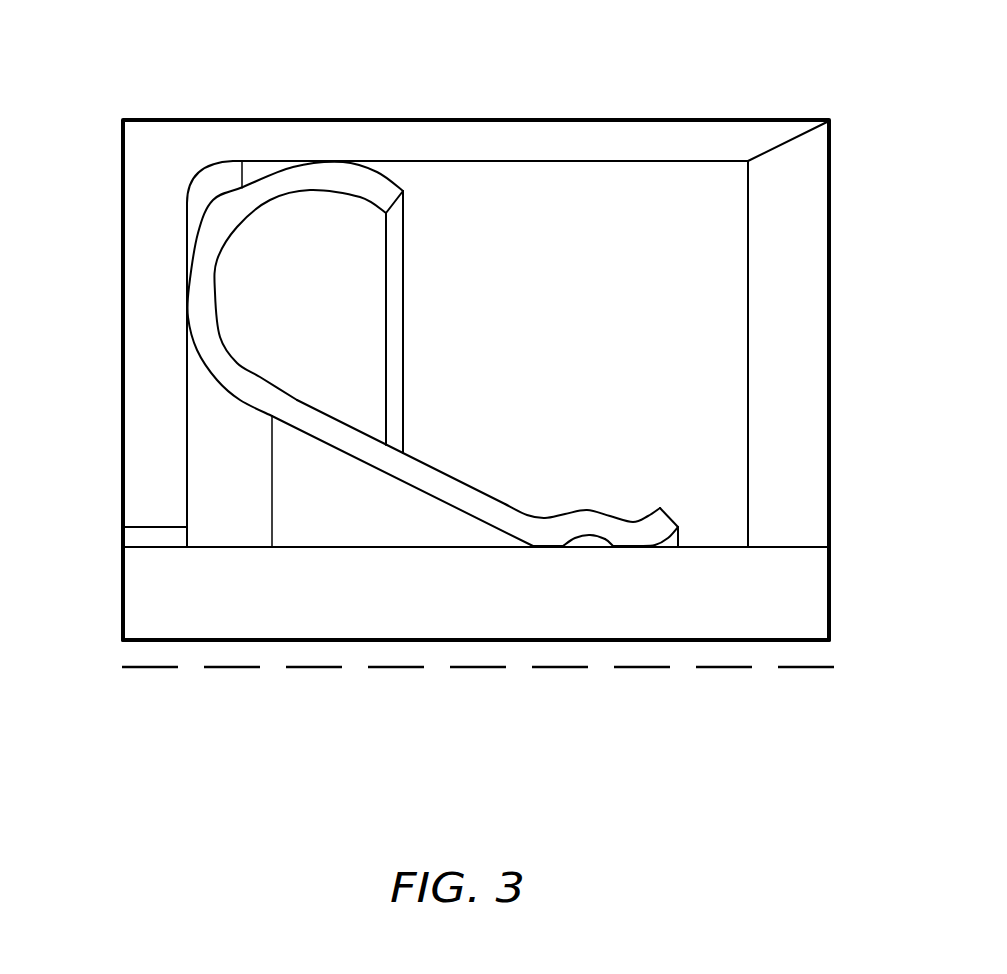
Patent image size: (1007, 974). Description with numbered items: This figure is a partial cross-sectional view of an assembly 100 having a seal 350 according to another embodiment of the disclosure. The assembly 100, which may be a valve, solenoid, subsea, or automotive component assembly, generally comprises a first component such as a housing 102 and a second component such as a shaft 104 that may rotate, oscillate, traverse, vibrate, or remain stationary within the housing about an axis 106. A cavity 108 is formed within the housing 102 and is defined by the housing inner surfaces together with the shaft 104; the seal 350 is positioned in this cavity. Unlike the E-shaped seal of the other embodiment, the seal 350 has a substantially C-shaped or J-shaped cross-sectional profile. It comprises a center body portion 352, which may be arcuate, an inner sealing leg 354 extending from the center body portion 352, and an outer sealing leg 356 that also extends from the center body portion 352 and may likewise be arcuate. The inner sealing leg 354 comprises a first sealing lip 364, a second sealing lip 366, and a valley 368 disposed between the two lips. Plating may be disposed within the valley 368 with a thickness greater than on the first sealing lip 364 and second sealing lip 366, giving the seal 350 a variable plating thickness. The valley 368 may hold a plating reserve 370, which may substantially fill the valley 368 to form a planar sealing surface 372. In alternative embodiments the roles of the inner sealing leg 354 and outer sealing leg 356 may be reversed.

The assembly 100 is at (763, 45).
The first component (housing) 102 is at (528, 118).
The second component (shaft) 104 is at (545, 641).
The axis 106 is at (730, 669).
The cavity 108 is at (570, 264).
The seal 350 is at (433, 458).
The center body portion 352 is at (142, 272).
The inner sealing leg 354 is at (307, 432).
The outer sealing leg 356 is at (380, 175).
The first sealing lip 364 is at (635, 548).
The second sealing lip 366 is at (533, 548).
The valley 368 is at (596, 540).
The plating reserve 370 is at (577, 540).
The planar sealing surface 372 is at (588, 537).